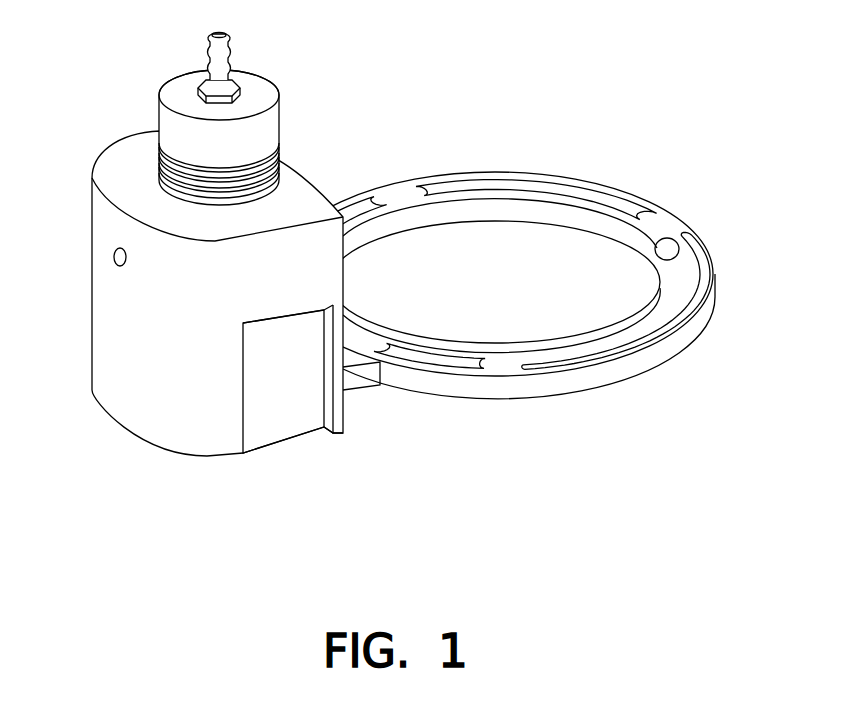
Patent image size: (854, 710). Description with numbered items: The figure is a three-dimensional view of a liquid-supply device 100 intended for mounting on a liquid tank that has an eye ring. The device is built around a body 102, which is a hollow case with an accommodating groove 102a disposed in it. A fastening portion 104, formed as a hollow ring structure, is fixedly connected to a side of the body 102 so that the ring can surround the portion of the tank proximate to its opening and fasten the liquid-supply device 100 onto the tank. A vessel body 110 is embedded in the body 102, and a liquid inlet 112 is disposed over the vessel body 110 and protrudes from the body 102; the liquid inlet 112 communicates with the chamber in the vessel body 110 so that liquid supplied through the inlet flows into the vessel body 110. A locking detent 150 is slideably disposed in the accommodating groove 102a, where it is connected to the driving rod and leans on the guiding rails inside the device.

The liquid-supply device 100 is at (743, 549).
The body 102 is at (224, 339).
The accommodating groove 102a is at (333, 396).
The fastening portion 104 is at (578, 377).
The vessel body 110 is at (262, 125).
The liquid inlet 112 is at (223, 45).
The locking detent 150 is at (270, 422).